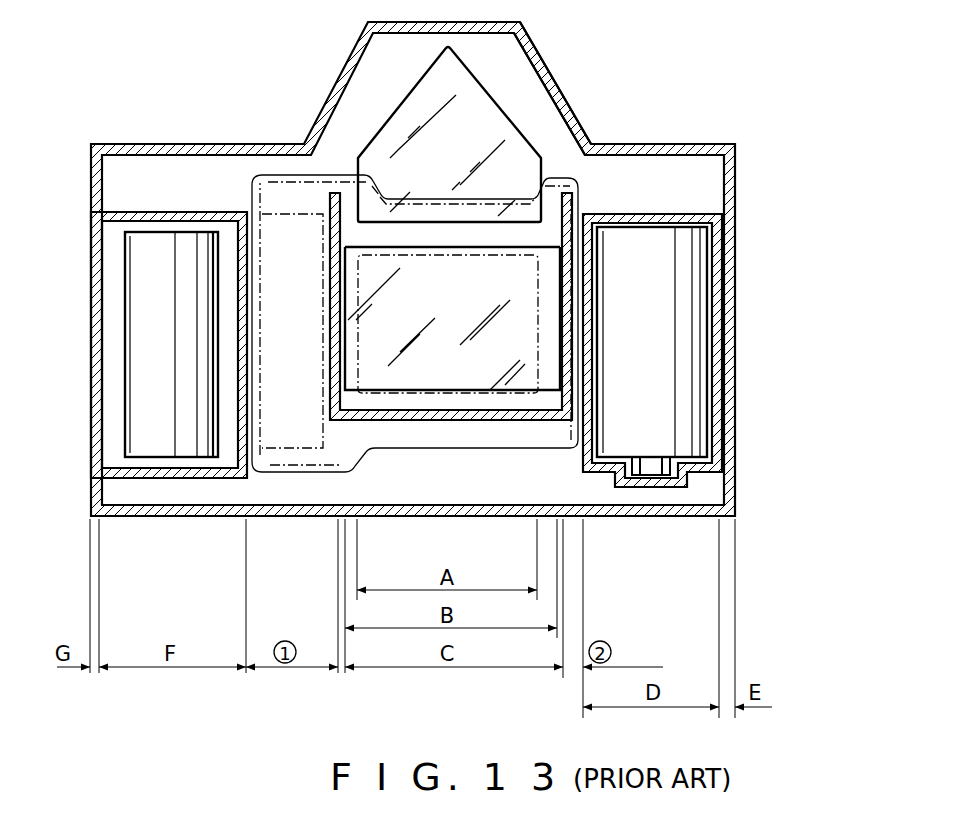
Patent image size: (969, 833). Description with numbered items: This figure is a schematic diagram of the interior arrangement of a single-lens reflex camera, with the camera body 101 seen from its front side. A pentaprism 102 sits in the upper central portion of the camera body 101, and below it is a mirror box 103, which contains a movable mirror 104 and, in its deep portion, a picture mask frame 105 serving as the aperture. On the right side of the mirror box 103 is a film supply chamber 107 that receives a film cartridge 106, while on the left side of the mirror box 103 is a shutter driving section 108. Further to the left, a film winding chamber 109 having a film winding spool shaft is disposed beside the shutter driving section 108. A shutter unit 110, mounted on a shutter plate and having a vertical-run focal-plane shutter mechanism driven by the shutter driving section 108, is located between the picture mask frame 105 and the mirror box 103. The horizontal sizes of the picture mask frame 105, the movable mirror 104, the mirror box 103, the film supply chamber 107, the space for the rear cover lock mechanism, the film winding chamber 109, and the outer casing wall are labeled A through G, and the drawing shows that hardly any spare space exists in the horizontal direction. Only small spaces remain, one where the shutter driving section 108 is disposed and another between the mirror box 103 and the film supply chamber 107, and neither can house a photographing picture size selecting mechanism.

The camera body 101 is at (687, 145).
The pentaprism 102 is at (495, 107).
The mirror box 103 is at (598, 141).
The movable mirror 104 is at (415, 380).
The picture mask frame 105 is at (510, 380).
The film cartridge 106 is at (672, 245).
The film supply chamber 107 is at (705, 360).
The shutter driving section 108 is at (288, 212).
The film winding chamber 109 is at (105, 240).
The shutter unit 110 is at (338, 174).